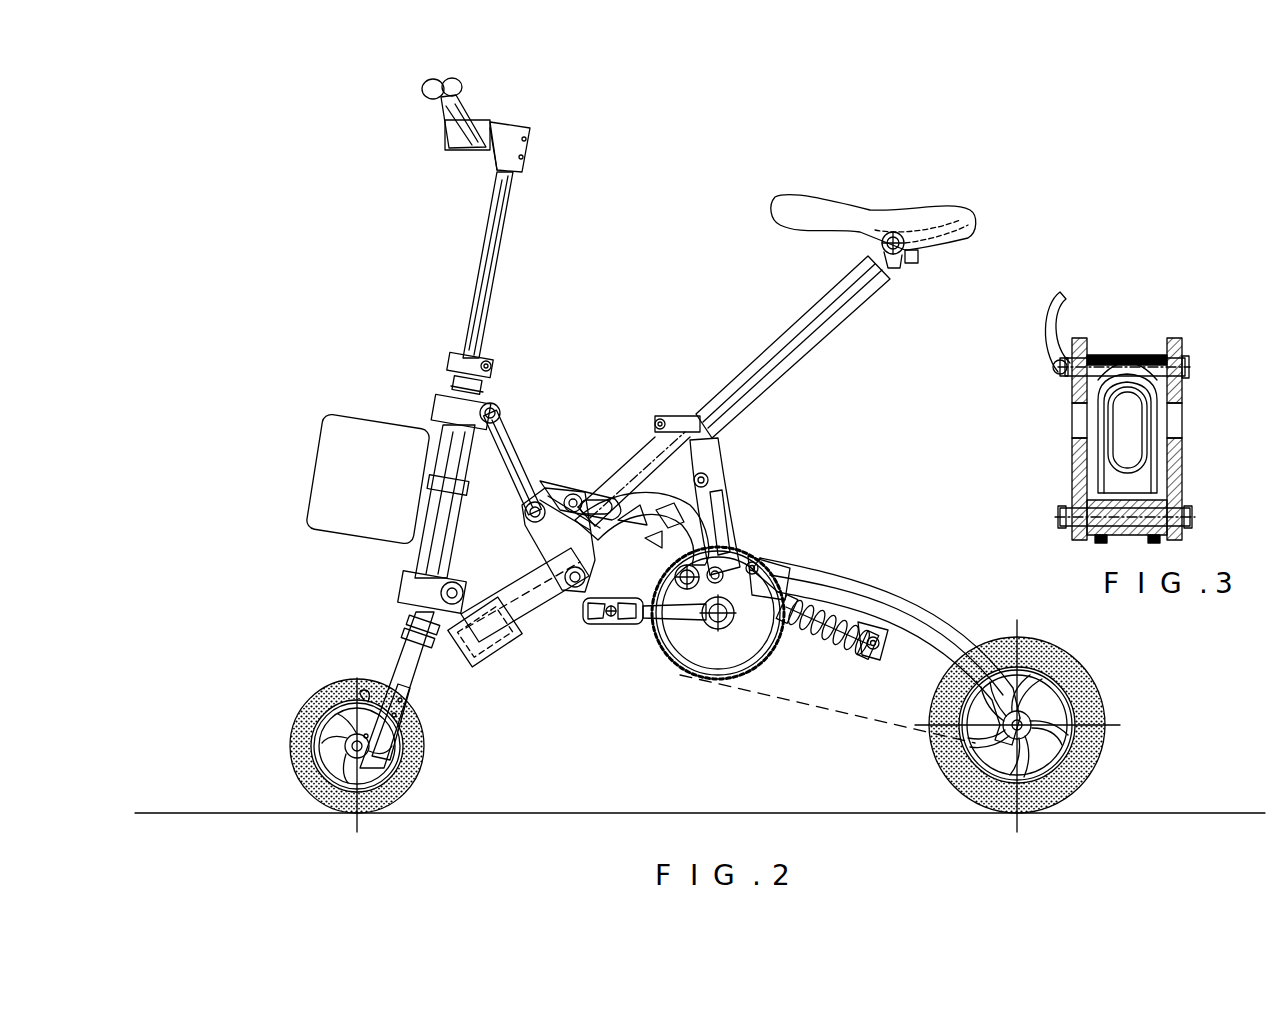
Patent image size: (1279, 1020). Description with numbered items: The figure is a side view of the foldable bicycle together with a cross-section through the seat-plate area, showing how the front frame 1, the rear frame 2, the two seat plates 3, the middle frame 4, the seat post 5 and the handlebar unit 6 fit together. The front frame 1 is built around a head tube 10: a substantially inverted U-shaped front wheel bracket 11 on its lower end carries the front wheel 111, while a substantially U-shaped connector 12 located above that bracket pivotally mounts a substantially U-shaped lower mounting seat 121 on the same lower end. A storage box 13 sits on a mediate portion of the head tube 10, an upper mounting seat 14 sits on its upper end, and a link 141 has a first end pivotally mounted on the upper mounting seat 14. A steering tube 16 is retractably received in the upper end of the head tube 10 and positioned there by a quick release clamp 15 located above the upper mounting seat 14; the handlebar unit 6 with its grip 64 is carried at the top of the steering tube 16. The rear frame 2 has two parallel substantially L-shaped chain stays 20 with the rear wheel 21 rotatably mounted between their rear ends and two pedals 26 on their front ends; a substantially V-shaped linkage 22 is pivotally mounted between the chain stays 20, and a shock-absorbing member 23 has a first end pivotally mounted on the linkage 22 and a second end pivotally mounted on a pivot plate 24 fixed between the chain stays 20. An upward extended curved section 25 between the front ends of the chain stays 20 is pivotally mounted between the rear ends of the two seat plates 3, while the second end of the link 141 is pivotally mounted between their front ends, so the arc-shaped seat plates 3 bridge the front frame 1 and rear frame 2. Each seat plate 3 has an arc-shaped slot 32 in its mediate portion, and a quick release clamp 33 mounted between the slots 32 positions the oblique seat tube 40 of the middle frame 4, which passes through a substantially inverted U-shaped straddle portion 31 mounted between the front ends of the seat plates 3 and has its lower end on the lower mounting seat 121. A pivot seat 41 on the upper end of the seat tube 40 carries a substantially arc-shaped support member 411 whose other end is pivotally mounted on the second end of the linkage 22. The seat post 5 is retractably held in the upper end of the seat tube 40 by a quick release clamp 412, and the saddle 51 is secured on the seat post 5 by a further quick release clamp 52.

In FIG. 2, the front frame 1 is at (462, 278).
In FIG. 2, the rear frame 2 is at (947, 607).
In FIG. 2, the seat plates 3 is at (575, 500).
In FIG. 3, the seat plates 3 is at (1175, 388).
In FIG. 2, the middle frame 4 is at (752, 482).
In FIG. 2, the seat post 5 is at (787, 348).
In FIG. 3, the seat post 5 is at (1130, 430).
In FIG. 2, the handlebar unit 6 is at (540, 118).
In FIG. 2, the head tube 10 is at (452, 457).
In FIG. 2, the front wheel bracket 11 is at (393, 652).
In FIG. 2, the connector 12 is at (405, 587).
In FIG. 2, the storage box 13 is at (330, 490).
In FIG. 2, the upper mounting seat 14 is at (453, 408).
In FIG. 2, the quick release clamp 15 is at (465, 362).
In FIG. 2, the steering tube 16 is at (493, 228).
In FIG. 2, the chain stays 20 is at (907, 612).
In FIG. 2, the rear wheel 21 is at (1105, 747).
In FIG. 2, the linkage 22 is at (772, 578).
In FIG. 2, the shock-absorbing member 23 is at (843, 633).
In FIG. 2, the pivot plate 24 is at (890, 633).
In FIG. 2, the curved section 25 is at (685, 600).
In FIG. 2, the pedals 26 is at (580, 620).
In FIG. 3, the straddle portion 31 is at (1160, 477).
In FIG. 2, the arc-shaped slot 32 is at (610, 497).
In FIG. 3, the arc-shaped slot 32 is at (1125, 353).
In FIG. 3, the quick release clamp 33 is at (1042, 342).
In FIG. 2, the seat tube 40 is at (507, 560).
In FIG. 2, the pivot seat 41 is at (700, 455).
In FIG. 2, the saddle 51 is at (887, 213).
In FIG. 2, the quick release clamp 52 is at (893, 273).
In FIG. 2, the handlebar grip 64 is at (468, 96).
In FIG. 2, the front wheel 111 is at (312, 697).
In FIG. 2, the lower mounting seat 121 is at (488, 640).
In FIG. 2, the link 141 is at (503, 438).
In FIG. 2, the support member 411 is at (723, 512).
In FIG. 2, the quick release clamp 412 is at (693, 420).